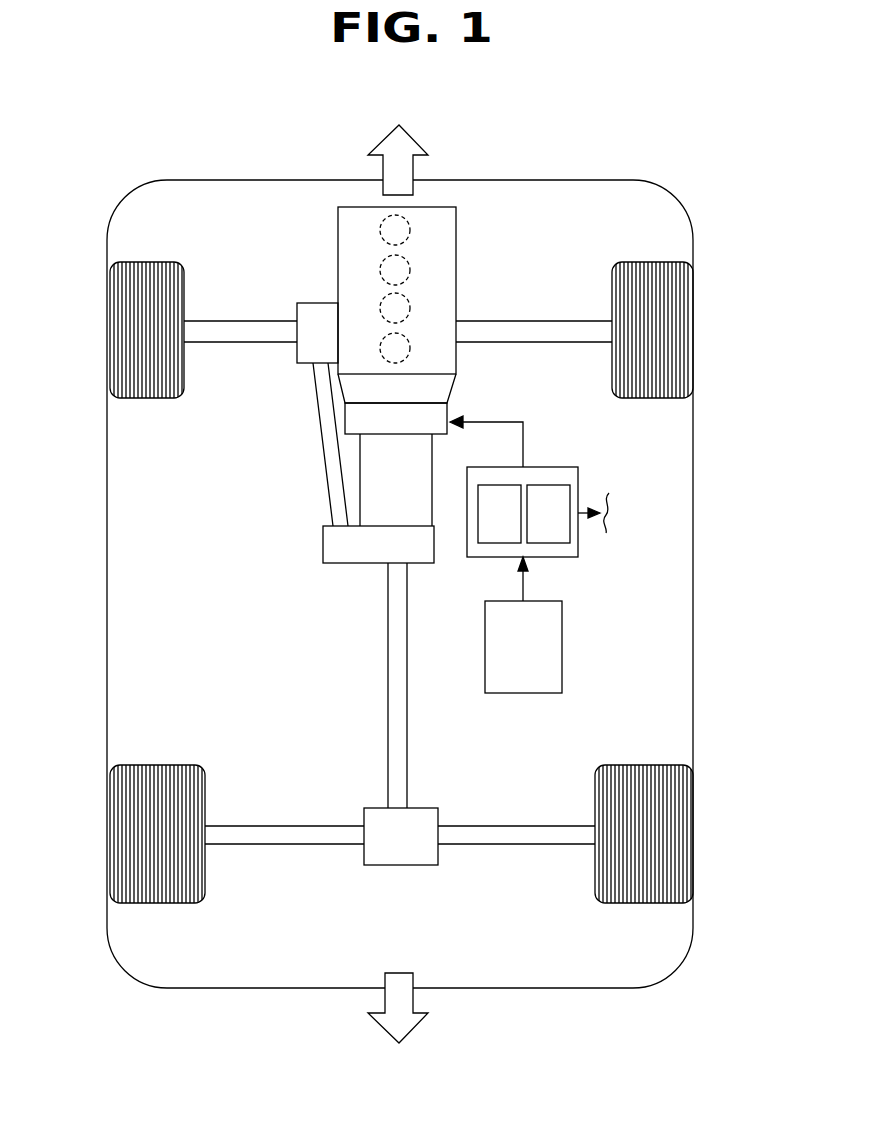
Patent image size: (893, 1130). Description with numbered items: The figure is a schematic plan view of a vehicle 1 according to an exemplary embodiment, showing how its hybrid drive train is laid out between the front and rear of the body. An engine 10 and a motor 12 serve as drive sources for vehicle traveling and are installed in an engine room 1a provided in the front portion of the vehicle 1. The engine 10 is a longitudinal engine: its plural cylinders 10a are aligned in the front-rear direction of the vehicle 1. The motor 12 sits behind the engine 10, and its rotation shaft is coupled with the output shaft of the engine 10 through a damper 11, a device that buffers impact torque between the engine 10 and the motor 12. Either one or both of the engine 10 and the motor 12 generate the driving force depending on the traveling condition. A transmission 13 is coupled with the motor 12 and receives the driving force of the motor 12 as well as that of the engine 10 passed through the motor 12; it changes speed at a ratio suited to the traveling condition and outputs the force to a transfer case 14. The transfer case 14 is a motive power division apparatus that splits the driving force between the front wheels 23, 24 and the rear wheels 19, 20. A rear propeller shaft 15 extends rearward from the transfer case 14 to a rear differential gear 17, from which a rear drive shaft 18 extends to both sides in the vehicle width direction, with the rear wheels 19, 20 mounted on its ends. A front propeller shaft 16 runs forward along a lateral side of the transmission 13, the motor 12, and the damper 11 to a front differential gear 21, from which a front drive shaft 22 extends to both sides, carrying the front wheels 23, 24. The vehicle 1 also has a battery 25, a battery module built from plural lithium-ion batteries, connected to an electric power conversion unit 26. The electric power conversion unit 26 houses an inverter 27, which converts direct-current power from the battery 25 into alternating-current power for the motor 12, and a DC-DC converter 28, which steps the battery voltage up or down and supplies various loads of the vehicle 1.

The vehicle 1 is at (640, 130).
The engine room 1a is at (576, 230).
The engine 10 is at (426, 249).
The cylinders 10a is at (411, 348).
The damper 11 is at (437, 388).
The motor 12 is at (432, 413).
The transmission 13 is at (417, 453).
The transfer case 14 is at (325, 538).
The rear propeller shaft 15 is at (400, 735).
The front propeller shaft 16 is at (327, 440).
The rear differential gear 17 is at (377, 853).
The rear drive shaft 18 is at (528, 837).
The rear wheel 19 is at (140, 832).
The rear wheel 20 is at (657, 829).
The front differential gear 21 is at (317, 320).
The front drive shaft 22 is at (233, 328).
The front wheel 23 is at (130, 318).
The front wheel 24 is at (660, 318).
The battery 25 is at (562, 641).
The electric power conversion unit 26 is at (601, 510).
The inverter 27 is at (520, 543).
The DC-DC converter 28 is at (567, 543).